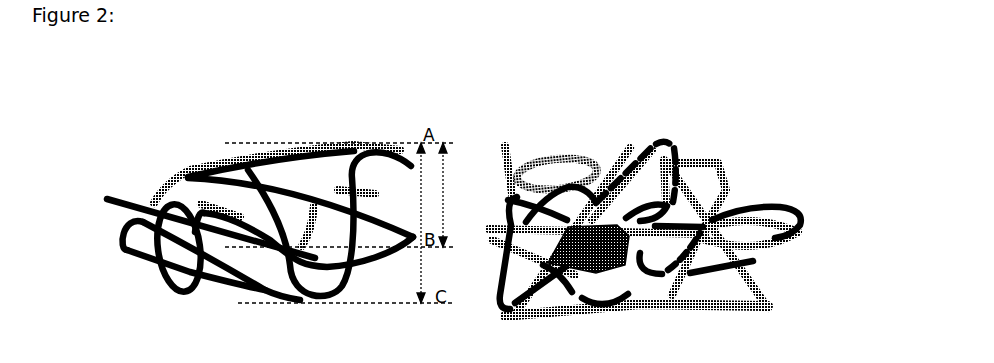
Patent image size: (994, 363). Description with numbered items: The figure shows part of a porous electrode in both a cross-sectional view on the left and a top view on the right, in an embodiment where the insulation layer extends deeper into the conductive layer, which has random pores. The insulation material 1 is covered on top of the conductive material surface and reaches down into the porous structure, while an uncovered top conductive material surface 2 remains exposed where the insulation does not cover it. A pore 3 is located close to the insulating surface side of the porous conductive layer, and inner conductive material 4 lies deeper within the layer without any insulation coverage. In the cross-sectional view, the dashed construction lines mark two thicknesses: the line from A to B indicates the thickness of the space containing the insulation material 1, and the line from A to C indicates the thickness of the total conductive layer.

The insulation material 1 is at (178, 170).
The uncovered top conductive material surface 2 is at (314, 203).
The pore 3 is at (630, 244).
The inner conductive material 4 is at (132, 256).